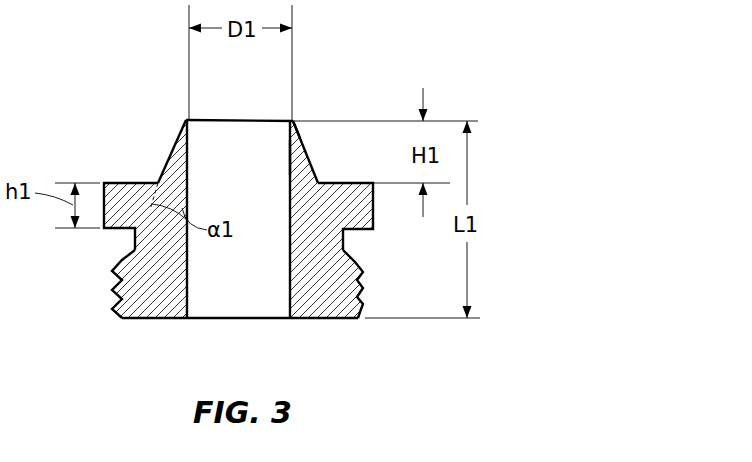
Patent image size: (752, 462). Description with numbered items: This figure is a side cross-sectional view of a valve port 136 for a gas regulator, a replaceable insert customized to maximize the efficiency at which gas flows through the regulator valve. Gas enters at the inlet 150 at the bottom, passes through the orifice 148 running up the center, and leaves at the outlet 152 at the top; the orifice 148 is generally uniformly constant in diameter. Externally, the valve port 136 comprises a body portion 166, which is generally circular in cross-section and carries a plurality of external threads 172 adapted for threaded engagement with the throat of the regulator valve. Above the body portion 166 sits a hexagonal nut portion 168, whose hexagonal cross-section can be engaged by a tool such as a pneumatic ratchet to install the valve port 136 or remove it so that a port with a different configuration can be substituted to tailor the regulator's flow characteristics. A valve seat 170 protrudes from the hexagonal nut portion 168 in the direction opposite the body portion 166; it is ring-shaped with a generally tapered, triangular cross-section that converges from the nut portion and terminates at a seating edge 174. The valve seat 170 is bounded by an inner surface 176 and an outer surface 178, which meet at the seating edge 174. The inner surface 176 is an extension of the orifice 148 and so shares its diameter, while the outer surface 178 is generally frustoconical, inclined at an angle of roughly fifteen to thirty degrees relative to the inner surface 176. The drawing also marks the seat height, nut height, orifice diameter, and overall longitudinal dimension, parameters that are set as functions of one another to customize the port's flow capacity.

The valve port 136 is at (153, 84).
The orifice 148 is at (188, 300).
The inlet 150 is at (158, 320).
The outlet 152 is at (175, 142).
The body portion 166 is at (357, 320).
The hexagonal nut portion 168 is at (365, 213).
The valve seat 170 is at (310, 160).
The external threads 172 is at (108, 290).
The seating edge 174 is at (292, 120).
The inner surface 176 is at (290, 157).
The outer surface 178 is at (303, 138).